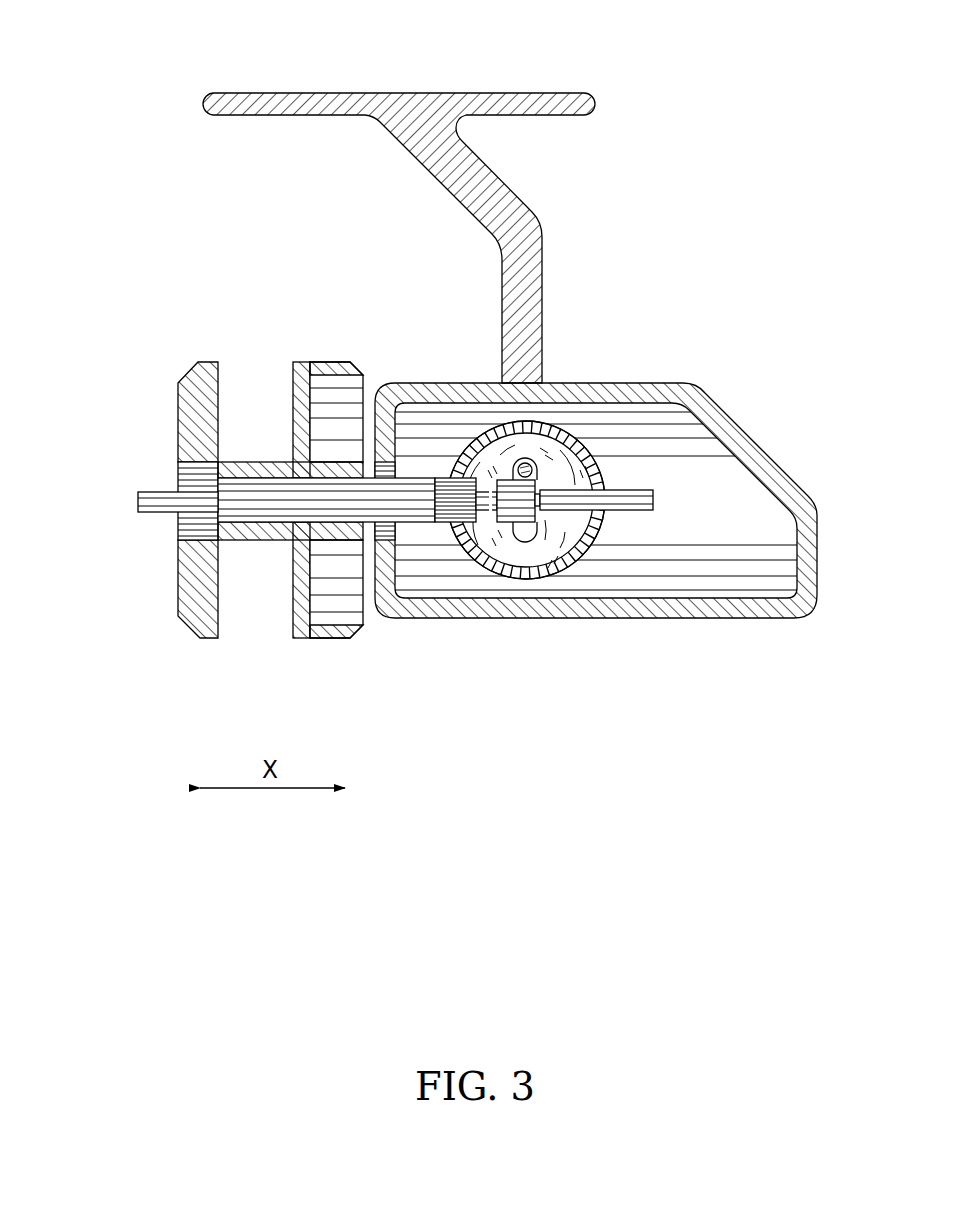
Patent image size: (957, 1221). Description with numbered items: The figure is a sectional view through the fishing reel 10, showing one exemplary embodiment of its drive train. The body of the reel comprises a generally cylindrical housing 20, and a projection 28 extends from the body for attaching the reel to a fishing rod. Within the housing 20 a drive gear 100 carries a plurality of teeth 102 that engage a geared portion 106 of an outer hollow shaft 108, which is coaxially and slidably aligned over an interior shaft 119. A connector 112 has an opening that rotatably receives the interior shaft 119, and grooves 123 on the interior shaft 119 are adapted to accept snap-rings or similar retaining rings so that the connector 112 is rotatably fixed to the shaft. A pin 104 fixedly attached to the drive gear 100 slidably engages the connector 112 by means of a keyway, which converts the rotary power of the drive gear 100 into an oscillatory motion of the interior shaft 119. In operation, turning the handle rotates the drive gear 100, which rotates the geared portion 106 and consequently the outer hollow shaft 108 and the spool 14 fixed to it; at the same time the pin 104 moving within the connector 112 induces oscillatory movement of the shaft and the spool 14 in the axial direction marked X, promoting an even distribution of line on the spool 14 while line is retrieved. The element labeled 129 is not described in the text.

The fishing reel 10 is at (668, 117).
The spool 14 is at (293, 362).
The housing 20 is at (812, 490).
The projection 28 is at (545, 226).
The drive gear 100 is at (552, 466).
The teeth 102 is at (594, 524).
The pin 104 is at (535, 460).
The geared portion 106 is at (440, 505).
The outer hollow shaft 108 is at (412, 520).
The connector 112 is at (527, 463).
The interior shaft 119 is at (140, 490).
The grooves 123 is at (493, 478).
The spool flange insert 129 is at (345, 405).